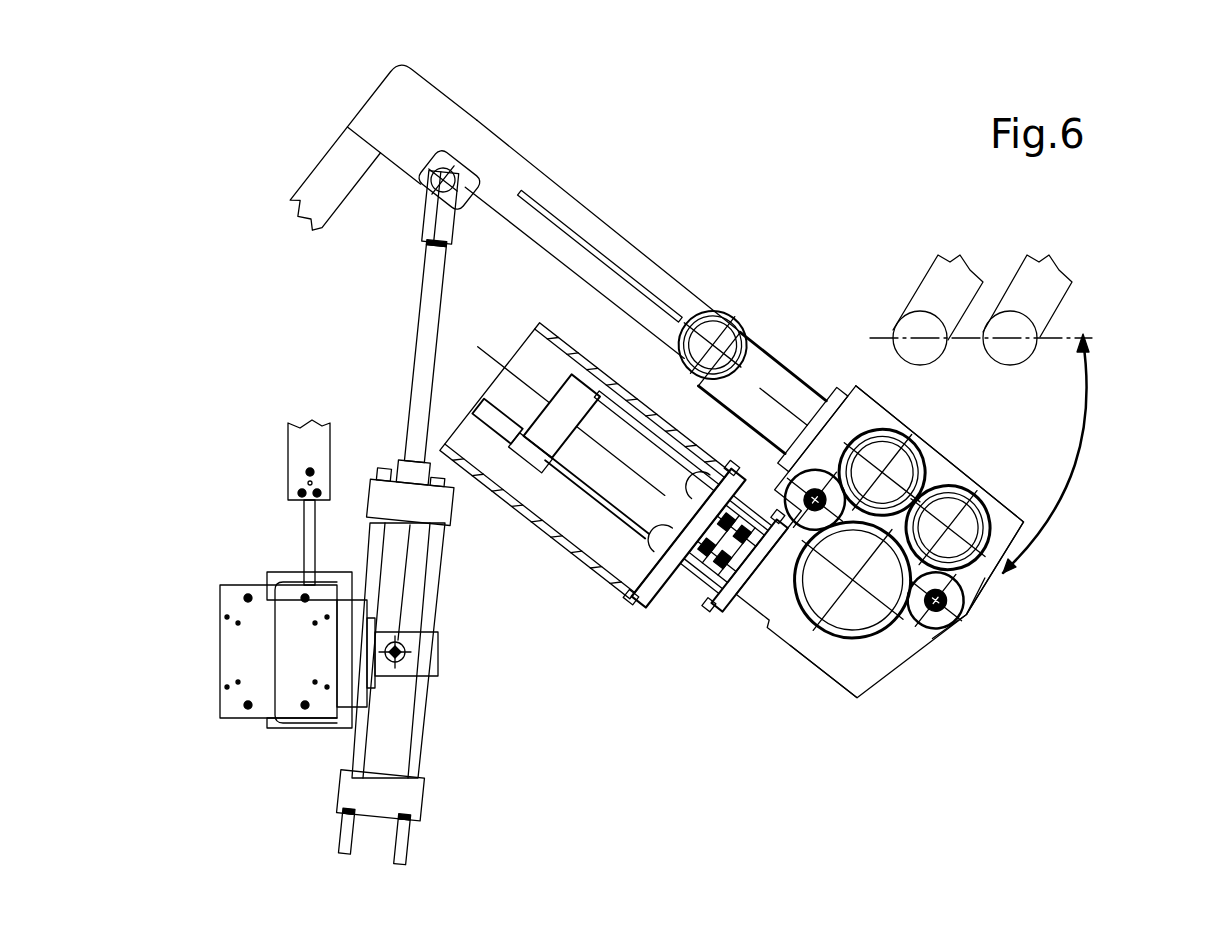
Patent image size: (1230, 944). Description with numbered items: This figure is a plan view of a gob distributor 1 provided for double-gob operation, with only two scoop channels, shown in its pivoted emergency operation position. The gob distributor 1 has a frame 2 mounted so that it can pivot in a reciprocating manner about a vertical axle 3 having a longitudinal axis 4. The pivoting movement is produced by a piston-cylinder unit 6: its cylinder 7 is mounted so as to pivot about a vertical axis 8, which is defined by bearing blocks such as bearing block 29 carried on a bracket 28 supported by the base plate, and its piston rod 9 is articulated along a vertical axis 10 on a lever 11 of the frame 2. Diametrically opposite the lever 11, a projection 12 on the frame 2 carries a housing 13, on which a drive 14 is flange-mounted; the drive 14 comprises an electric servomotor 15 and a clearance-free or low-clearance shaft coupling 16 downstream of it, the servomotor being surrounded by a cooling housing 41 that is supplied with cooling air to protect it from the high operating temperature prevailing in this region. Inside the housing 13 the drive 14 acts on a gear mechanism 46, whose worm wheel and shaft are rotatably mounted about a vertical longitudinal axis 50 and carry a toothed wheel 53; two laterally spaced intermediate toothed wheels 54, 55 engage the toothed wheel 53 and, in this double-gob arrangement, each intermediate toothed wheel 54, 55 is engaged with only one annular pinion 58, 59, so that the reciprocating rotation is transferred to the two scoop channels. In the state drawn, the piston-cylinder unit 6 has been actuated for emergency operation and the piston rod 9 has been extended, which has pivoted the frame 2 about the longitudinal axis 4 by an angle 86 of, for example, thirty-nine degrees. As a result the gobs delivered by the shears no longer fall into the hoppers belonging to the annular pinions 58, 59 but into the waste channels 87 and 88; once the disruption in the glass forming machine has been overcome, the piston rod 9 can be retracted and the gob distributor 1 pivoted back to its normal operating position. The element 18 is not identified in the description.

The gob distributor 1 is at (728, 162).
The frame 2 is at (371, 97).
The vertical axle 3 is at (727, 348).
The longitudinal axis 4 is at (705, 330).
The piston-cylinder unit 6 is at (419, 758).
The cylinder 7 is at (392, 722).
The vertical axis 8 is at (400, 642).
The piston rod 9 is at (425, 290).
The vertical axis 10 is at (447, 170).
The lever 11 is at (425, 110).
The projection 12 is at (780, 395).
The housing 13 is at (905, 663).
The drive 14 is at (568, 549).
The electric servomotor 15 is at (608, 482).
The shaft coupling 16 is at (695, 578).
The head housing 18 is at (860, 405).
The bracket 28 is at (341, 645).
The bearing block 29 is at (420, 676).
The cooling housing 41 is at (622, 585).
The gear mechanism 46 is at (966, 581).
The vertical longitudinal axis 50 is at (815, 650).
The toothed wheel 53 is at (878, 640).
The intermediate toothed wheel 54 is at (800, 495).
The intermediate toothed wheel 55 is at (935, 618).
The annular pinion 58 is at (913, 440).
The annular pinion 59 is at (970, 493).
The angle 86 is at (1077, 403).
The waste channel 87 is at (893, 328).
The waste channel 88 is at (1012, 365).